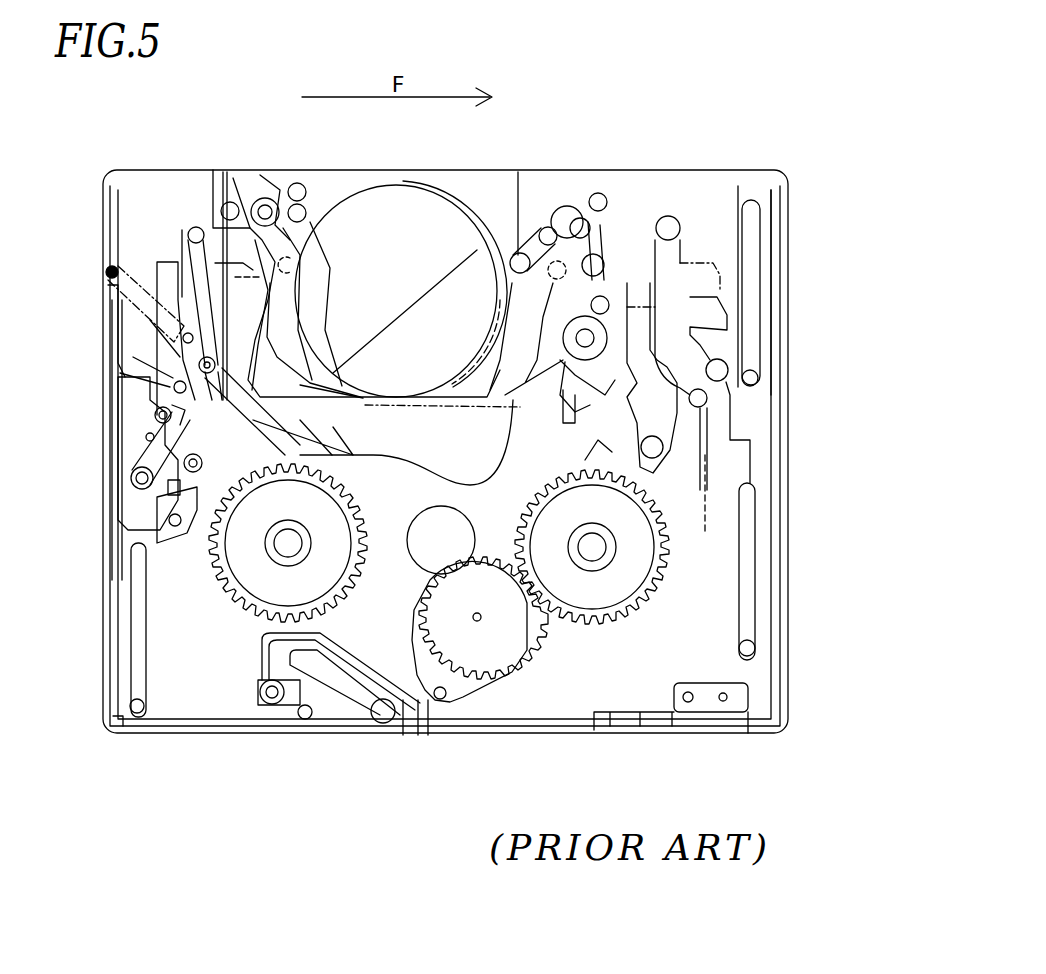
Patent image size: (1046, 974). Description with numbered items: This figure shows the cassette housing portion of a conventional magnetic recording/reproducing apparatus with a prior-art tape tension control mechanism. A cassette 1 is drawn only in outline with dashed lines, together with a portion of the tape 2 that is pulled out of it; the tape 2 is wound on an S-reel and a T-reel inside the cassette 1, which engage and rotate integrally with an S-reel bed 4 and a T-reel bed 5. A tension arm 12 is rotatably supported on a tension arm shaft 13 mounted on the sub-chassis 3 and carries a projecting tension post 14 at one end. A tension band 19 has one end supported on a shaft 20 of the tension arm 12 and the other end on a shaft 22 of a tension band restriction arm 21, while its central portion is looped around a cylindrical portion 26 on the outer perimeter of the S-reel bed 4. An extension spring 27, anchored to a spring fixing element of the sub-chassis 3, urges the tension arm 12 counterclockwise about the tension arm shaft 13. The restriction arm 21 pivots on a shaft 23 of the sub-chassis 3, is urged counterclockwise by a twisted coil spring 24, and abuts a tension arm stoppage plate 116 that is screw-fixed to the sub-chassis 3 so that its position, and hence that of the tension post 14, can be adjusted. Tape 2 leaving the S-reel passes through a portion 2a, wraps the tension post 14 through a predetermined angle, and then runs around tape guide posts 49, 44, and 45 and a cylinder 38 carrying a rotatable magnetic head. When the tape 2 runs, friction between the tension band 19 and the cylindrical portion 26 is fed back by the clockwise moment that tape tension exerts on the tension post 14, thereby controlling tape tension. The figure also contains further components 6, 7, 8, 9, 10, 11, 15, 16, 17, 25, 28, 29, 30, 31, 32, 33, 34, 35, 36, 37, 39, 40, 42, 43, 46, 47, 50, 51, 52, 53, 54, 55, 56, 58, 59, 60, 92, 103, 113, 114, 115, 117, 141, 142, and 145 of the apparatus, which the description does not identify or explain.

The cassette 1 is at (155, 262).
The tape 2 is at (232, 195).
The portion 2a is at (200, 318).
The sub-chassis 3 is at (778, 438).
The S-reel bed 4 is at (225, 585).
The T-reel bed 5 is at (577, 627).
The cam 6 is at (490, 680).
The roller 7 is at (495, 555).
The chassis frame 8 is at (705, 170).
The pin 9 is at (443, 684).
The cam gear 10 is at (463, 703).
The bracket 11 is at (690, 686).
The tension arm 12 is at (195, 275).
The tension arm shaft 13 is at (156, 356).
The tension post 14 is at (190, 232).
The lever 15 is at (140, 410).
The pivot pin 16 is at (158, 410).
The pin 17 is at (120, 410).
The tension band 19 is at (282, 437).
The shaft 20 is at (217, 366).
The tension band restriction arm 21 is at (118, 507).
The shaft 22 is at (194, 473).
The shaft 23 is at (132, 478).
The twisted coil spring 24 is at (135, 458).
The lever 25 is at (143, 395).
The cylindrical portion 26 is at (250, 488).
The extension spring 27 is at (145, 298).
The lever 28 is at (690, 323).
The roller 29 is at (717, 383).
The roller 30 is at (672, 220).
The pin 31 is at (698, 408).
The slide rod 32 is at (325, 718).
The pin 33 is at (403, 740).
The roller 34 is at (378, 724).
The pin 35 is at (425, 736).
The guide slot 36 is at (762, 303).
The guide pin 37 is at (757, 382).
The cylinder 38 is at (410, 185).
The roller 39 is at (262, 196).
The roller 40 is at (582, 218).
The guide plate 42 is at (230, 252).
The arm 43 is at (273, 357).
The tape guide post 44 is at (270, 198).
The tape guide post 45 is at (308, 205).
The pin 46 is at (522, 250).
The roller 47 is at (565, 218).
The tape guide post 49 is at (212, 200).
The pin 50 is at (603, 296).
The link 51 is at (590, 258).
The pin 52 is at (600, 258).
The lever 53 is at (652, 378).
The pin 54 is at (652, 436).
The pivot 55 is at (562, 345).
The pin 56 is at (585, 457).
The stopper 58 is at (580, 418).
The lever 59 is at (550, 432).
The spring 60 is at (565, 378).
The slide member 92 is at (367, 728).
The base member 103 is at (635, 740).
The pin 113 is at (302, 718).
The pivot 114 is at (268, 700).
The arm 115 is at (168, 493).
The tension arm stoppage plate 116 is at (166, 545).
The pin 117 is at (175, 528).
The roller 141 is at (298, 183).
The roller 142 is at (600, 194).
The guide line 145 is at (729, 492).